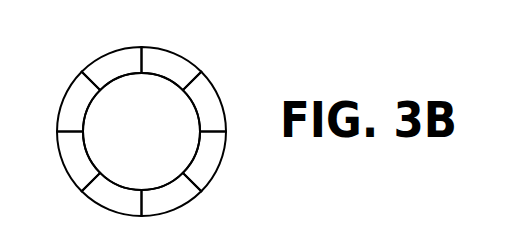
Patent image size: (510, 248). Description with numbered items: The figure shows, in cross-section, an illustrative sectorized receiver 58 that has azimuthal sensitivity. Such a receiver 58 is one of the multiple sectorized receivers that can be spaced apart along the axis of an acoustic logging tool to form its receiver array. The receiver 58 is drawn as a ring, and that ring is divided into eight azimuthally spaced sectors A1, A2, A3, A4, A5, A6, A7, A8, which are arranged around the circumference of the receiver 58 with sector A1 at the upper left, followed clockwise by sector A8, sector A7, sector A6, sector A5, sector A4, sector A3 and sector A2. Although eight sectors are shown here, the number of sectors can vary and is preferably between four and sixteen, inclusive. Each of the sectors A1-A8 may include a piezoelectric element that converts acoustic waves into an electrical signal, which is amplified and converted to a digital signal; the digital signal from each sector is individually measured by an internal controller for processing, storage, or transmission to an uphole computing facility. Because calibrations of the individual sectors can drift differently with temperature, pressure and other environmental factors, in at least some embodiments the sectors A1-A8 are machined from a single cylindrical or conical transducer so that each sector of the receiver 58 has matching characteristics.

The sector A1 is at (119, 49).
The sector A2 is at (62, 105).
The sector A3 is at (62, 157).
The sector A4 is at (120, 212).
The sector A5 is at (167, 212).
The sector A6 is at (222, 168).
The sector A7 is at (224, 103).
The sector A8 is at (179, 55).
The sectorized receiver 58 is at (167, 182).